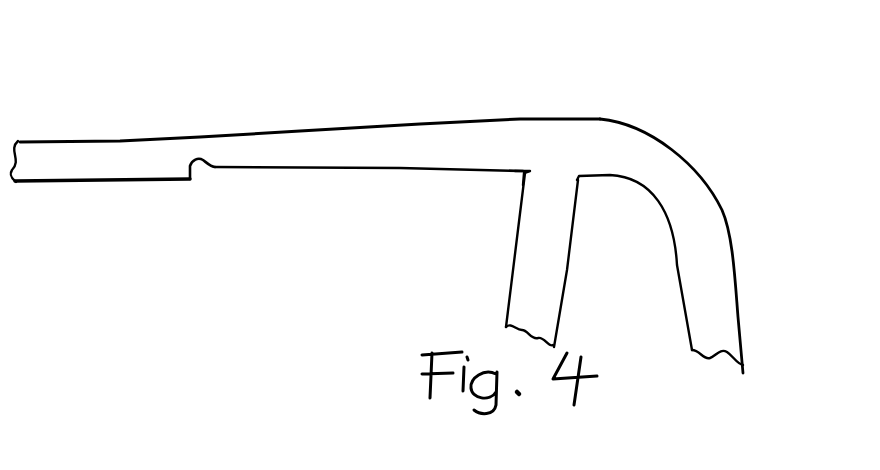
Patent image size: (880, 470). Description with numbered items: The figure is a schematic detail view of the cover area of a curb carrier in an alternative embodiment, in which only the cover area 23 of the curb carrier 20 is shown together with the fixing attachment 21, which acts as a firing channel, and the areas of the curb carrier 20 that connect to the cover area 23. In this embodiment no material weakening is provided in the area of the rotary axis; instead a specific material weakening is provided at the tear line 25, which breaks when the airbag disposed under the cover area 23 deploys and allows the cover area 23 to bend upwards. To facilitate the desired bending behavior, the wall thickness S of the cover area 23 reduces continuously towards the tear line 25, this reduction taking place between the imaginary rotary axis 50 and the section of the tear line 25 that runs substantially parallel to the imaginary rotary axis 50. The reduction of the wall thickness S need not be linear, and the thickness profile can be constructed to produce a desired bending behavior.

The curb carrier 20 is at (628, 156).
The fixing attachment 21 is at (532, 262).
The cover area 23 is at (418, 148).
The tear line 25 is at (207, 172).
The imaginary rotary axis 50 is at (582, 78).
The wall thickness S is at (253, 90).